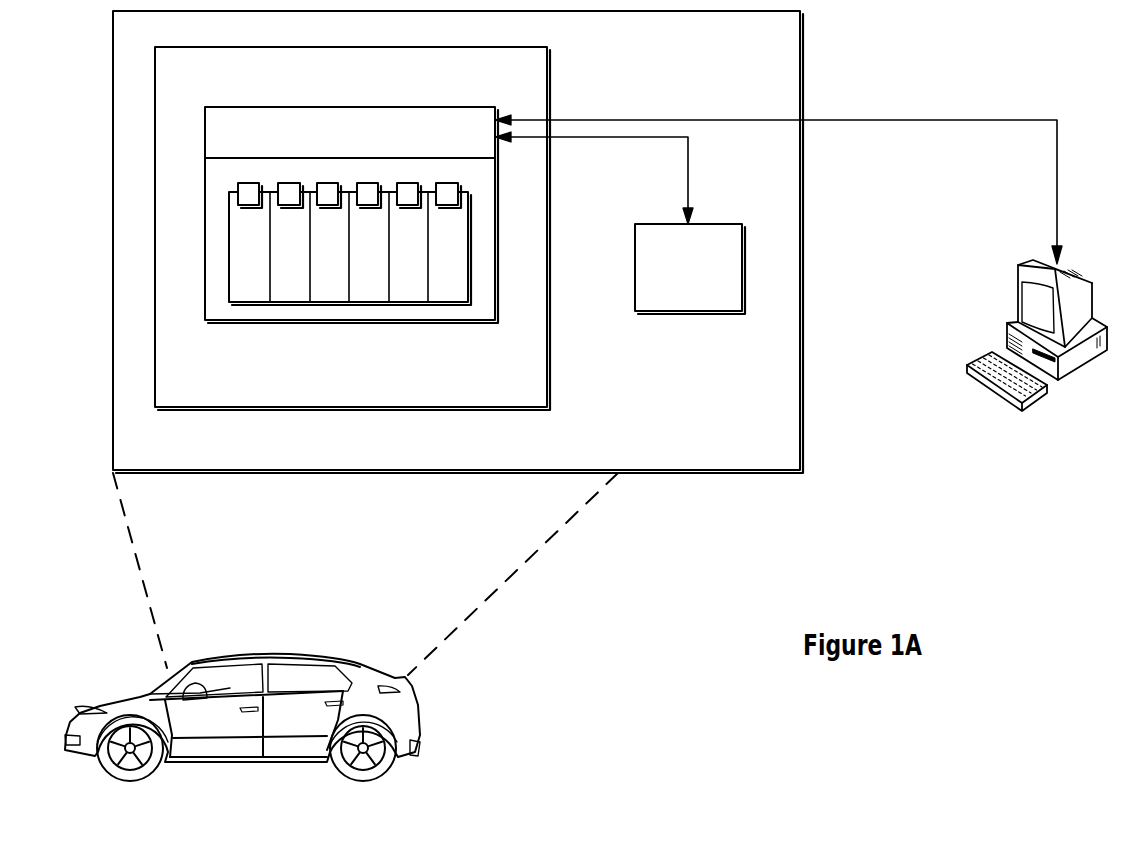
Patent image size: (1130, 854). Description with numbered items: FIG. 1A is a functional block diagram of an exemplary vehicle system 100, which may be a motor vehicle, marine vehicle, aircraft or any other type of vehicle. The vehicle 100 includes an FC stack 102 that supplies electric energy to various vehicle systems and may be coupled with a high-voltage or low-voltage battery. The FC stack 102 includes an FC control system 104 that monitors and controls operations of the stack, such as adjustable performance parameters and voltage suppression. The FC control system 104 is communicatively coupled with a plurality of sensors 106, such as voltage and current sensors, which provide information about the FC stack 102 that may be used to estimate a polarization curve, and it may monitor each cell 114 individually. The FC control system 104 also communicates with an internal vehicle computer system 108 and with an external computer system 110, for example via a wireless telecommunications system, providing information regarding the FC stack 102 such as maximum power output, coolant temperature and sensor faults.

The vehicle system 100 is at (147, 690).
The FC stack 102 is at (488, 179).
The FC control system 104 is at (488, 132).
The plurality of sensors 106 is at (307, 184).
The internal vehicle computer system 108 is at (702, 274).
The external computer system 110 is at (993, 395).
The cell 114 is at (323, 287).